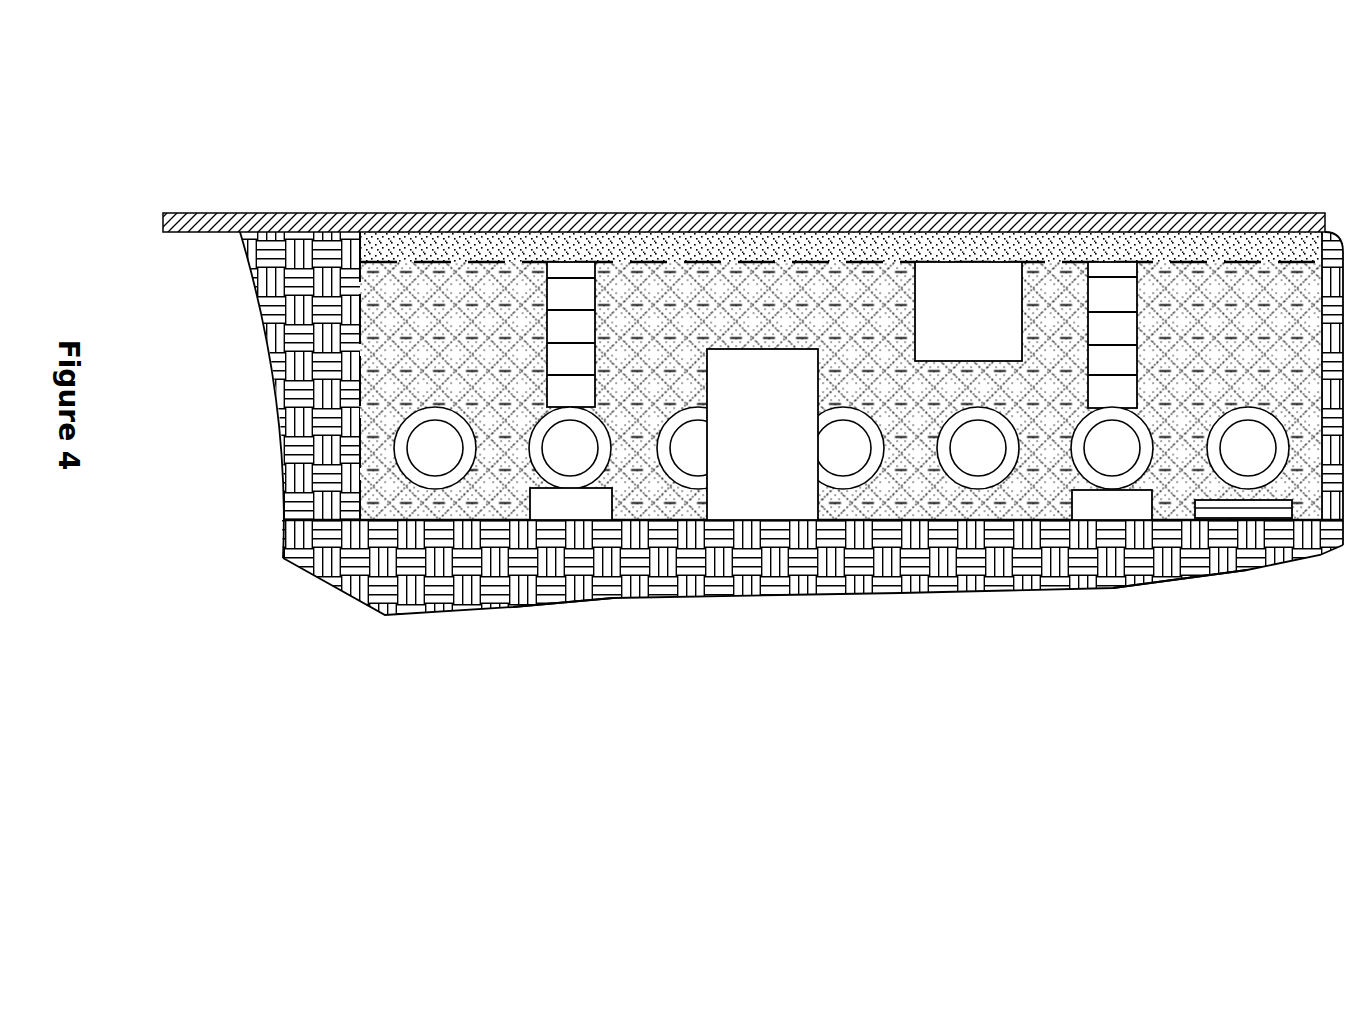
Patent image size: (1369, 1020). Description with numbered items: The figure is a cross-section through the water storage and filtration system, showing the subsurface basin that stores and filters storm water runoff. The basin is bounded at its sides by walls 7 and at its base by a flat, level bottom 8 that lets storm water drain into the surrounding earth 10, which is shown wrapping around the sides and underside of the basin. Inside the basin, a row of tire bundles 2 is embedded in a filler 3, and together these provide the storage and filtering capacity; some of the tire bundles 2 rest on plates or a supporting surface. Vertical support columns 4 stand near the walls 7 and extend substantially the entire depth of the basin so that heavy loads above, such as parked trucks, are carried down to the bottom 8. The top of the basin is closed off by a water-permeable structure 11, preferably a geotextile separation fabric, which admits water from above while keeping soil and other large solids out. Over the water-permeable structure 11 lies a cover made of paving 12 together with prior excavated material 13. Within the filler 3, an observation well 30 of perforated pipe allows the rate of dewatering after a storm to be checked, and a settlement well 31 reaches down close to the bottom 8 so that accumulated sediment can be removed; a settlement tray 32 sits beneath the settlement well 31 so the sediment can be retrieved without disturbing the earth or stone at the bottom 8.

The tire bundle 2 is at (985, 522).
The filler 3 is at (508, 288).
The vertical support column 4 is at (1117, 298).
The wall 7 is at (1285, 525).
The bottom 8 is at (595, 587).
The surrounding earth 10 is at (350, 552).
The water-permeable structure 11 is at (362, 234).
The paving 12 is at (570, 221).
The prior excavated material 13 is at (720, 243).
The observation well 30 is at (757, 468).
The settlement well 31 is at (1170, 572).
The settlement tray 32 is at (1270, 515).